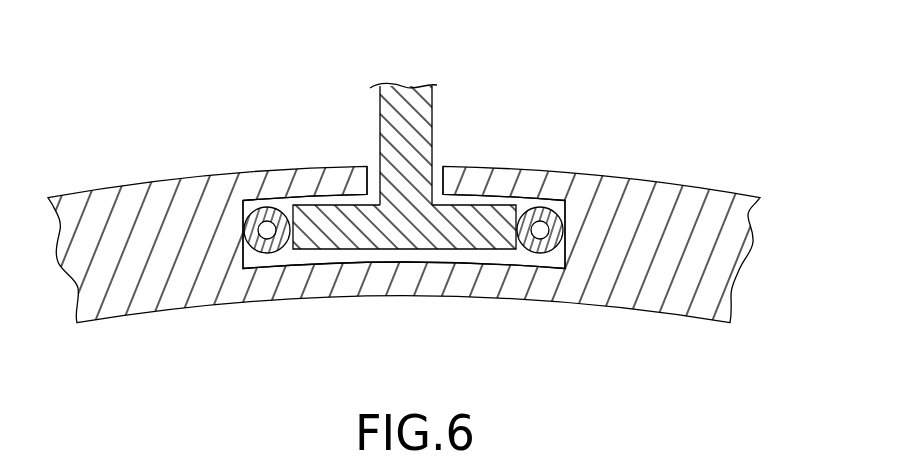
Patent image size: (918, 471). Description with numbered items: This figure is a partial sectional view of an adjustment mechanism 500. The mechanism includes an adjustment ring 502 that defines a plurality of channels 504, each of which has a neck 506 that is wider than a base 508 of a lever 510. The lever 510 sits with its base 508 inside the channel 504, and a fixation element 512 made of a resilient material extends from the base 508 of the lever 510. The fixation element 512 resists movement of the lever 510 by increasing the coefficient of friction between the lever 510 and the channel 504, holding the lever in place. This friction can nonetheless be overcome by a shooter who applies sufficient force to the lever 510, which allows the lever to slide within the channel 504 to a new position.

The adjustment mechanism 500 is at (440, 212).
The adjustment ring 502 is at (578, 285).
The channel 504 is at (264, 272).
The neck 506 is at (364, 150).
The base 508 is at (374, 235).
The lever 510 is at (417, 123).
The fixation element 512 is at (563, 217).